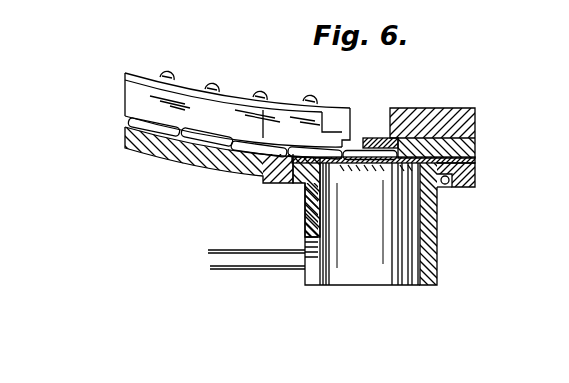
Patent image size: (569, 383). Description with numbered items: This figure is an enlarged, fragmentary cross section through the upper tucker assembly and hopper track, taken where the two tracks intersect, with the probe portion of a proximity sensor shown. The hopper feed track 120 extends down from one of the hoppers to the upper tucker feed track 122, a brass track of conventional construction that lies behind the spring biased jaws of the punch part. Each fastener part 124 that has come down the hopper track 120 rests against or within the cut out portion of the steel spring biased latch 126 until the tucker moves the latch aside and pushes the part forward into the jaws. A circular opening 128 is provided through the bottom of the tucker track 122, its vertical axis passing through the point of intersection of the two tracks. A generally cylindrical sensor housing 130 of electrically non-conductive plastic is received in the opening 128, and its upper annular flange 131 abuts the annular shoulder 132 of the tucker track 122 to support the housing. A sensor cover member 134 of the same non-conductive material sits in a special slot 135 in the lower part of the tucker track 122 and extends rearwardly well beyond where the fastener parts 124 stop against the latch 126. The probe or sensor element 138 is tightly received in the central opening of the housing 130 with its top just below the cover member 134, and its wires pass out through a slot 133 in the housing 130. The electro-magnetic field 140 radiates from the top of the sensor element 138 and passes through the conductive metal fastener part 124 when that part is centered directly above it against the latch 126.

The hopper feed track 120 is at (130, 92).
The upper tucker feed track 122 is at (437, 108).
The fastener part 124 is at (128, 120).
The spring biased latch 126 is at (468, 146).
The circular opening 128 is at (306, 187).
The sensor housing 130 is at (437, 227).
The upper annular flange 131 is at (470, 177).
The annular shoulder 132 is at (448, 182).
The slot 133 is at (308, 277).
The sensor cover member 134 is at (468, 162).
The slot 135 is at (265, 175).
The probe or sensor element 138 is at (373, 278).
The electro-magnetic field 140 is at (353, 168).